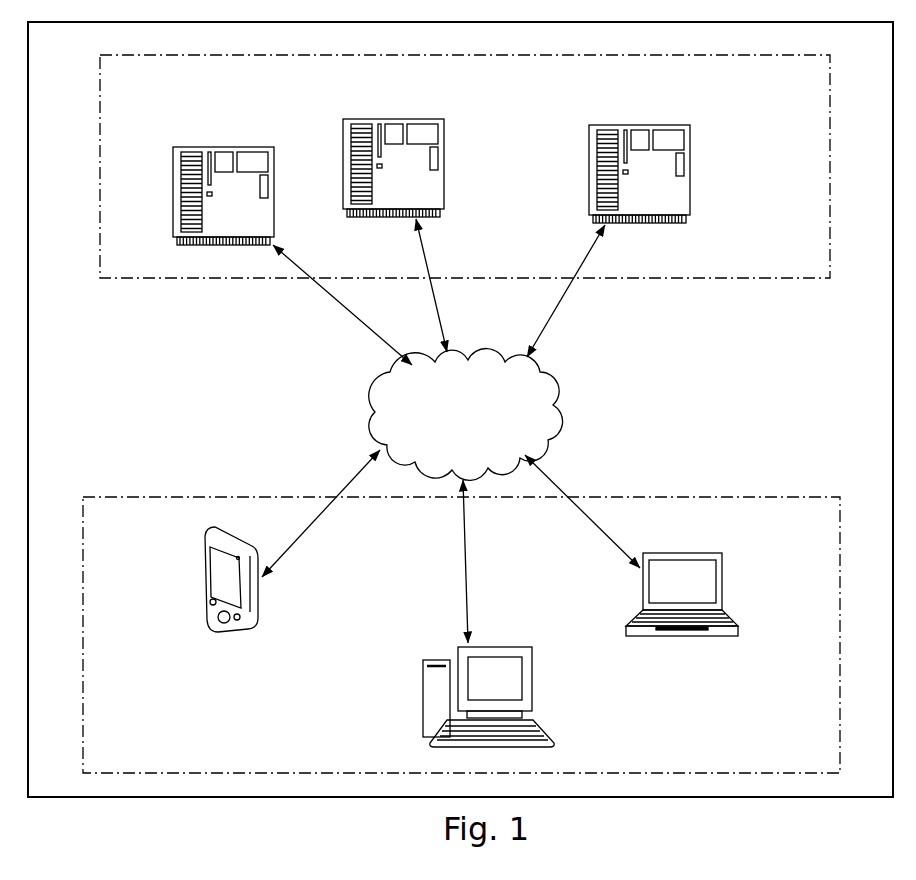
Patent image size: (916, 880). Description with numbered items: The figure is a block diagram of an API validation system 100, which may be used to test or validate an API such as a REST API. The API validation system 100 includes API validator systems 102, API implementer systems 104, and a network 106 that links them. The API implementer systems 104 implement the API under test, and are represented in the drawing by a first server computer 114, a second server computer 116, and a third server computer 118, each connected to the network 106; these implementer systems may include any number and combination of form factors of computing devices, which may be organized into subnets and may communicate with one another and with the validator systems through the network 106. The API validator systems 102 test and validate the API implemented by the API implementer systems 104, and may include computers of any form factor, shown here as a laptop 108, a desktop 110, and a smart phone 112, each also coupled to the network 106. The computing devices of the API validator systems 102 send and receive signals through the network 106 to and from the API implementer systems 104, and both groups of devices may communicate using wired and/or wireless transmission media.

The API validation system 100 is at (120, 392).
The API validator systems 102 is at (163, 749).
The API implementer systems 104 is at (800, 266).
The network 106 is at (442, 434).
The laptop 108 is at (723, 583).
The desktop 110 is at (423, 690).
The smart phone 112 is at (207, 558).
The first server computer 114 is at (680, 126).
The second server computer 116 is at (398, 119).
The third server computer 118 is at (195, 147).